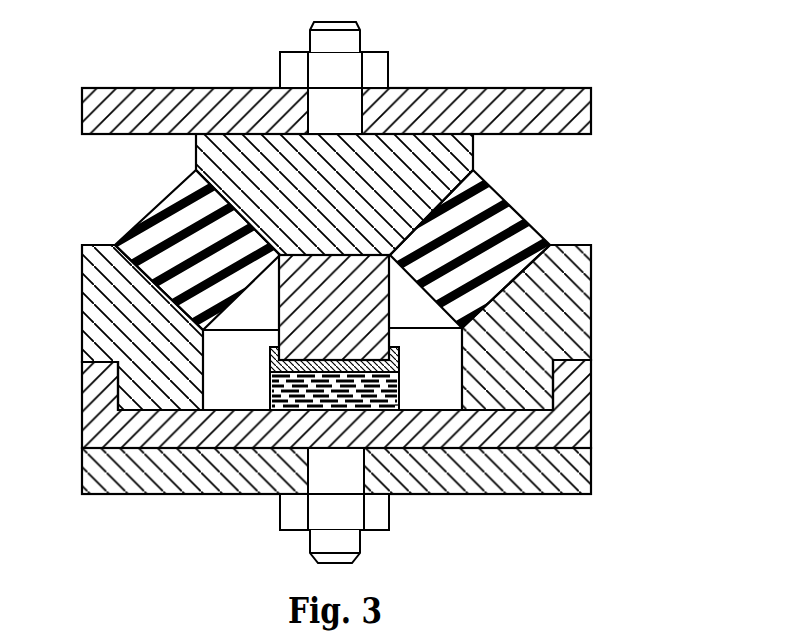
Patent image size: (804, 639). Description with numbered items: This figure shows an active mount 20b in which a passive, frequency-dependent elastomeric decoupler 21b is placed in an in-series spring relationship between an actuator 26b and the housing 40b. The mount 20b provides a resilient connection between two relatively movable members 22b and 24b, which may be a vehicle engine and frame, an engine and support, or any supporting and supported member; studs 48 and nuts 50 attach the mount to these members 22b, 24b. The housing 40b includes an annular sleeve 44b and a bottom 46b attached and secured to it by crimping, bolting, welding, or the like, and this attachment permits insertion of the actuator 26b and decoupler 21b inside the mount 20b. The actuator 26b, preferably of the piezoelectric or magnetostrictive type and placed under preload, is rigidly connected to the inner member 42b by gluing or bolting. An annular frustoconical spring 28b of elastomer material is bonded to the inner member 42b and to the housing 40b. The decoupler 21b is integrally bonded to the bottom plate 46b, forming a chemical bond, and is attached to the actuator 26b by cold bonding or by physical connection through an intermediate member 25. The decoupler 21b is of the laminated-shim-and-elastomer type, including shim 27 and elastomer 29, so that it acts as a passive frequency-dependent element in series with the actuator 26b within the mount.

The stud 48 is at (356, 23).
The nut 50 is at (389, 60).
The relatively movable member 22b is at (592, 90).
The inner member 42b is at (197, 158).
The spring 28b is at (497, 196).
The housing 40b is at (604, 283).
The sleeve 44b is at (592, 317).
The actuator 26b is at (350, 321).
The intermediate member 25 is at (270, 357).
The shim 27 is at (270, 391).
The elastomer 29 is at (400, 407).
The bottom 46b is at (592, 388).
The relatively movable member 24b is at (592, 461).
The elastomeric decoupler 21b is at (422, 426).
The active mount 20b is at (214, 524).